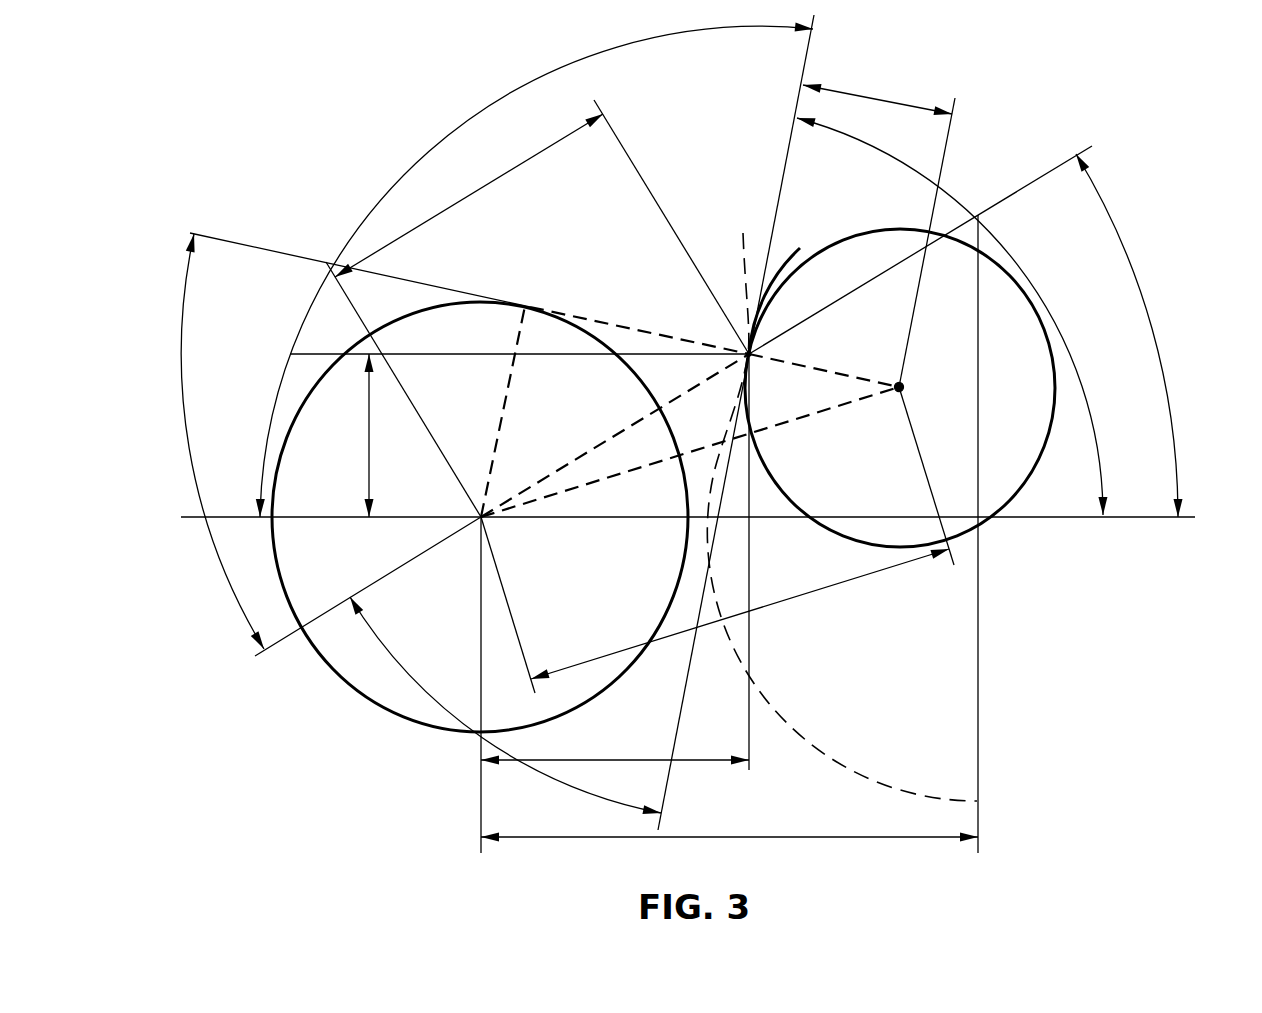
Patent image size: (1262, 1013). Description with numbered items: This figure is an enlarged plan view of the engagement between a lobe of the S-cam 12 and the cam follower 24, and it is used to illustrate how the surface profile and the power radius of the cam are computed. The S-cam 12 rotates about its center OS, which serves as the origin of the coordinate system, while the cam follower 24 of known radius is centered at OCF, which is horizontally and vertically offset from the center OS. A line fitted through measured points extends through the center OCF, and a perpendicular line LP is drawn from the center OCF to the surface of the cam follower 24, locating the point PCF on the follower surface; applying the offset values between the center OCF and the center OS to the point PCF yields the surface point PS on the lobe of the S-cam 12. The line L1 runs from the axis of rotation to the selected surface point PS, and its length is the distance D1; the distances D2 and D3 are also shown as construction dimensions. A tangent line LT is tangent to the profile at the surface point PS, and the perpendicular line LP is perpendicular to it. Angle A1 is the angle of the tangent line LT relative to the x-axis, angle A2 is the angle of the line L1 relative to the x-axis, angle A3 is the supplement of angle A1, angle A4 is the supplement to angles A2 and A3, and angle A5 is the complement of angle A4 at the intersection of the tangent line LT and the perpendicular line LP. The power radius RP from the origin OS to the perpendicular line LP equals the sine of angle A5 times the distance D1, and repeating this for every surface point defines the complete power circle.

The S-cam 12 is at (815, 758).
The cam follower 24 is at (1004, 464).
The angle of the tangent line A1 is at (1017, 258).
The angle of line L1 A2 is at (1146, 309).
The supplemental angle to angle A1 A3 is at (386, 194).
The supplemental angle to angles A2 and A3 A4 is at (477, 734).
The complementary angle to angle A4 A5 is at (190, 446).
The distance of line L1 D1 is at (470, 196).
The distance D2 is at (600, 322).
The distance D3 is at (662, 461).
The line L1 is at (617, 434).
The tangent line LT is at (799, 95).
The perpendicular line LP is at (810, 367).
The power radius RP is at (498, 427).
The surface point PS is at (749, 354).
The point at the surface of the cam follower PCF is at (756, 340).
The center of the S-cam OS is at (481, 517).
The center of the cam follower OCF is at (905, 387).